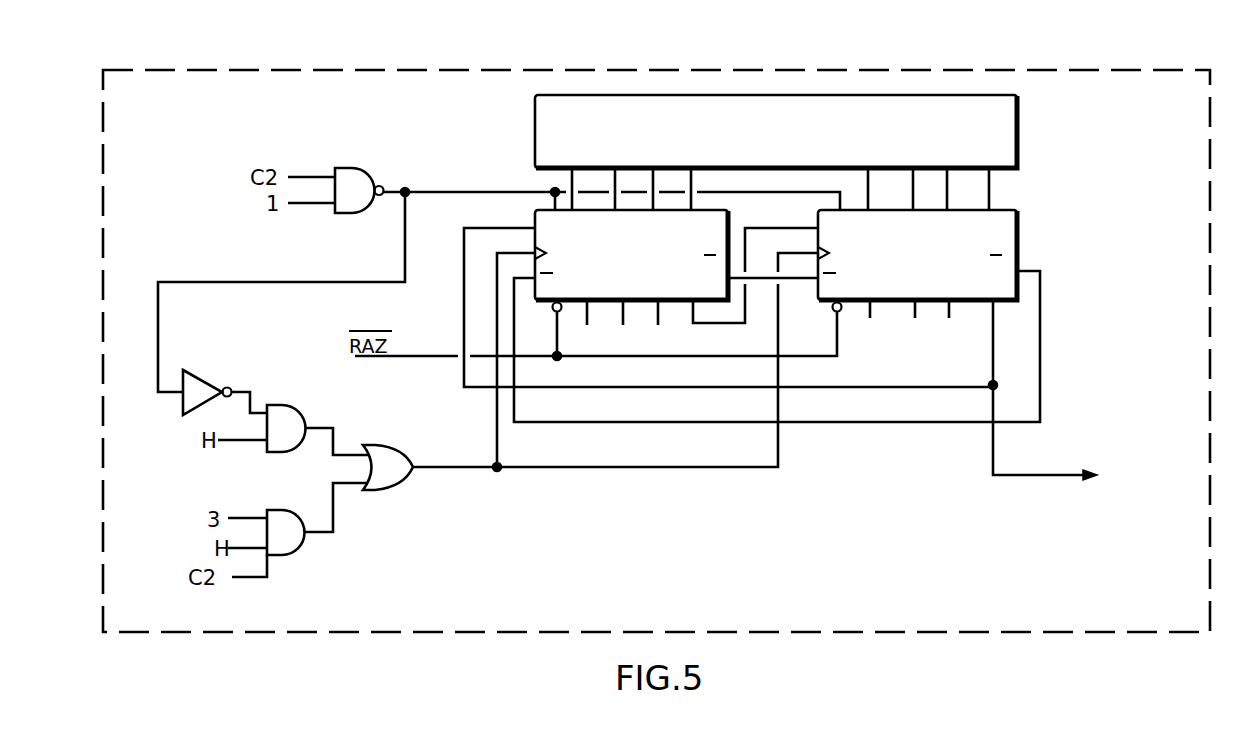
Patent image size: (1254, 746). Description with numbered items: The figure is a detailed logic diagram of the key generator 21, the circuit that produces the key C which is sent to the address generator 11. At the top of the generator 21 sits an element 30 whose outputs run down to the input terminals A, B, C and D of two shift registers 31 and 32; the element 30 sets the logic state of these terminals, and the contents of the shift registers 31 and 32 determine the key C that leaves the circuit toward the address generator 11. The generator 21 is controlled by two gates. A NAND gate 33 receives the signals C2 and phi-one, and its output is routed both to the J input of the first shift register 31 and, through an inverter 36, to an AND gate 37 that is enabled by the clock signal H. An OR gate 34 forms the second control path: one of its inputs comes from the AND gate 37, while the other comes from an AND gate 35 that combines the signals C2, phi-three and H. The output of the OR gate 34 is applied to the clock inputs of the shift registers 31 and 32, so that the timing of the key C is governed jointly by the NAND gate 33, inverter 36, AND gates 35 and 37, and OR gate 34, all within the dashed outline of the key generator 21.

The key generator 21 is at (512, 70).
The element 30 is at (772, 142).
The shift register 31 is at (633, 266).
The shift register 32 is at (925, 266).
The NAND gate 33 is at (354, 168).
The OR gate 34 is at (396, 478).
The AND gate 35 is at (294, 545).
The inverter 36 is at (198, 381).
The AND gate 37 is at (294, 441).
The address generator 11 is at (1097, 447).